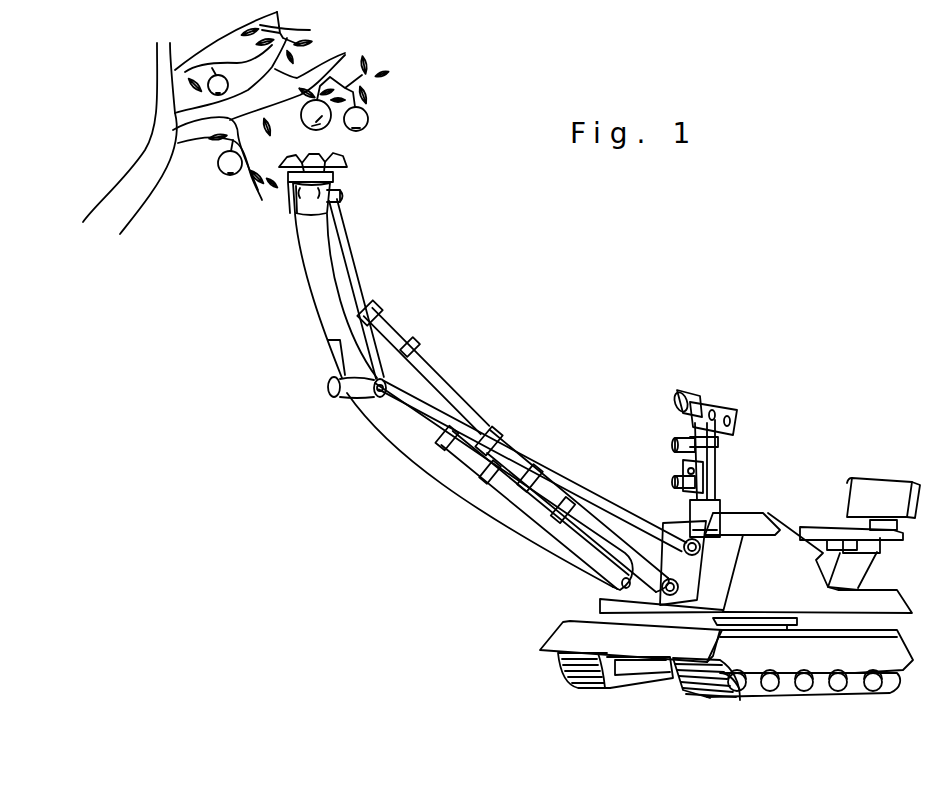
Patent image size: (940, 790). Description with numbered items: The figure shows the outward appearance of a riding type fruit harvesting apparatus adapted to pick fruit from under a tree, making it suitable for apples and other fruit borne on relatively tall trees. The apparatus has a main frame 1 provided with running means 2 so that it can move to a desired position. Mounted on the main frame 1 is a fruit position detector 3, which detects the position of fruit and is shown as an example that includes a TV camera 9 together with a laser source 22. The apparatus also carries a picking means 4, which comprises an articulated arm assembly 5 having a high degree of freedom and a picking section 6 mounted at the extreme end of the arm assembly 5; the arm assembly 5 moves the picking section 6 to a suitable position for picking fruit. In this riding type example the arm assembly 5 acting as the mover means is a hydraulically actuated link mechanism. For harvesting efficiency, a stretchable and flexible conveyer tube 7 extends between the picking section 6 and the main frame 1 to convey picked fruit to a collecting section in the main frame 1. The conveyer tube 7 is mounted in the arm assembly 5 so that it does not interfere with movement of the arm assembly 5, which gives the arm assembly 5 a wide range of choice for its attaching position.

The main frame 1 is at (556, 632).
The running means 2 is at (593, 690).
The fruit position detector 3 is at (799, 400).
The picking means 4 is at (495, 263).
The articulated arm assembly 5 is at (455, 366).
The picking section 6 is at (342, 178).
The conveyer tube 7 is at (318, 300).
The TV camera 9 is at (738, 413).
The laser source 22 is at (723, 477).